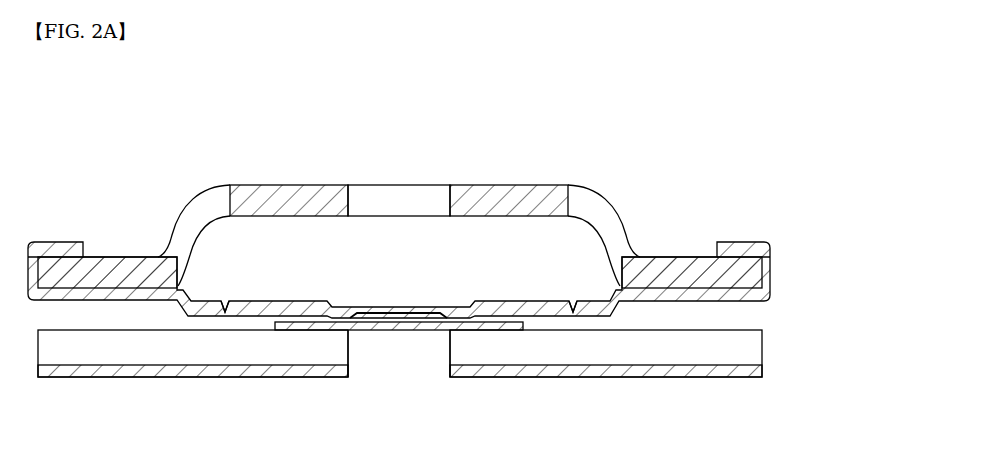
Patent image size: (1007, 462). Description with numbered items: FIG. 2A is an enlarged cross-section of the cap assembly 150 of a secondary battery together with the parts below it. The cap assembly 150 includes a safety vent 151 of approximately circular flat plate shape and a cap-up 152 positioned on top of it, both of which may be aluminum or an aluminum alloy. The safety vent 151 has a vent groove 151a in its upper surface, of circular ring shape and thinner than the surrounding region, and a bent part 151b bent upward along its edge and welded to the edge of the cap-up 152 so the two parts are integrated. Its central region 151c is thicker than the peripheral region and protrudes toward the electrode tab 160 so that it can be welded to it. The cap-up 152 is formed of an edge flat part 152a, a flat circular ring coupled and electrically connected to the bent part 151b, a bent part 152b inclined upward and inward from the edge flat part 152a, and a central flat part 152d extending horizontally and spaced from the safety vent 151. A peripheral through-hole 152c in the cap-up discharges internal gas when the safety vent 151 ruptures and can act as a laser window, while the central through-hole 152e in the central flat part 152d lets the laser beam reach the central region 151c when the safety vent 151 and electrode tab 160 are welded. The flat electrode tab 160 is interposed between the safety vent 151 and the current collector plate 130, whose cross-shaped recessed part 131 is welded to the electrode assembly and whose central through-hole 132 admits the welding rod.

The cap assembly 150 is at (454, 260).
The cap-up 152 is at (459, 193).
The central through-hole 152e is at (397, 200).
The central flat part 152d is at (500, 200).
The bent part 152b is at (590, 190).
The peripheral through-hole 152c is at (613, 235).
The edge flat part 152a is at (753, 270).
The safety vent 151 is at (414, 295).
The vent groove 151a is at (574, 311).
The bent part 151b is at (743, 250).
The central region 151c is at (403, 320).
The electrode tab 160 is at (378, 331).
The current collector plate 130 is at (450, 396).
The recessed part 131 is at (678, 378).
The central through-hole 132 is at (428, 355).